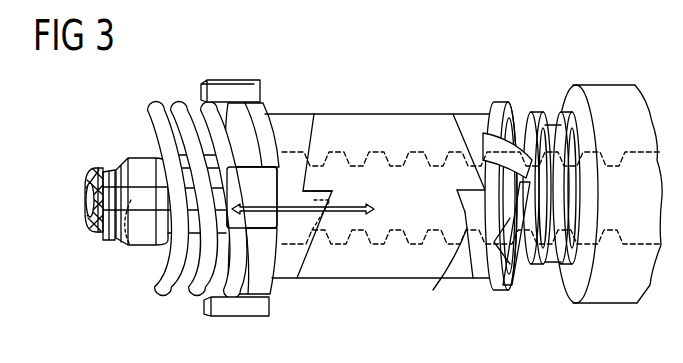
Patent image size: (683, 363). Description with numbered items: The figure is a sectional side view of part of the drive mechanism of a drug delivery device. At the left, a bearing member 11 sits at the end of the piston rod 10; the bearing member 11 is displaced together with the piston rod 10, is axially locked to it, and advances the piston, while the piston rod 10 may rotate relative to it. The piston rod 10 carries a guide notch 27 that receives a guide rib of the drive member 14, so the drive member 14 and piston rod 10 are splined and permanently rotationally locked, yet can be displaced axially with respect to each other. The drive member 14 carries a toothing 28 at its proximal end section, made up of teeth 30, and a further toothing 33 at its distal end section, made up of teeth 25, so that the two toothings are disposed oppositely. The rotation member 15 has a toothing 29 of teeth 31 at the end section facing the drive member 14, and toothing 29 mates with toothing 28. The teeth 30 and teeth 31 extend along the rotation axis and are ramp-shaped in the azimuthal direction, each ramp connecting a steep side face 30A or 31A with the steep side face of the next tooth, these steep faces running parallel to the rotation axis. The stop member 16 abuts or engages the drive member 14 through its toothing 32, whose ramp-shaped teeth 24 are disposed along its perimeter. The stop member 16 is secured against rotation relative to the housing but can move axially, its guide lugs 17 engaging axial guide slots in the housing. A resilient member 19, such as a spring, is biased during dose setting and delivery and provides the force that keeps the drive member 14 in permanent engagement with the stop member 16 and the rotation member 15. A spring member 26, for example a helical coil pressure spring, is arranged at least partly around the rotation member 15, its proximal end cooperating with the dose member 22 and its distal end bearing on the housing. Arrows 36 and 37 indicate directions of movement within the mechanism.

The piston rod 10 is at (146, 237).
The bearing member 11 is at (82, 222).
The drive member 14 is at (387, 122).
The rotation member 15 is at (474, 112).
The stop member 16 is at (287, 122).
The guide lug 17 is at (229, 90).
The resilient member 19 is at (160, 128).
The dose member 22 is at (607, 95).
The tooth 24 is at (320, 222).
The tooth 25 is at (313, 155).
The spring member 26 is at (563, 268).
The guide notch 27 is at (132, 203).
The toothing 28 is at (457, 130).
The toothing 29 is at (483, 270).
The tooth 30 is at (470, 176).
The steep side face 30A is at (463, 183).
The tooth 31 is at (460, 200).
The steep side face 31A is at (467, 228).
The toothing 32 is at (322, 200).
The toothing 33 is at (310, 187).
The arrow 36 is at (508, 263).
The arrow 37 is at (347, 228).